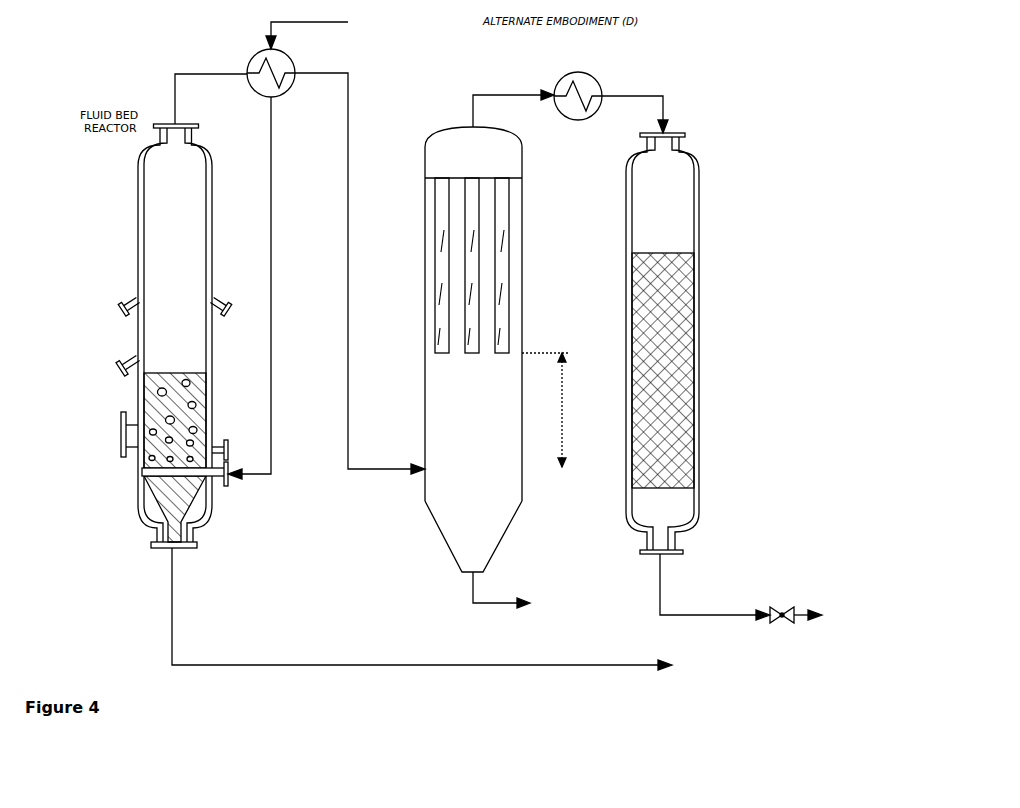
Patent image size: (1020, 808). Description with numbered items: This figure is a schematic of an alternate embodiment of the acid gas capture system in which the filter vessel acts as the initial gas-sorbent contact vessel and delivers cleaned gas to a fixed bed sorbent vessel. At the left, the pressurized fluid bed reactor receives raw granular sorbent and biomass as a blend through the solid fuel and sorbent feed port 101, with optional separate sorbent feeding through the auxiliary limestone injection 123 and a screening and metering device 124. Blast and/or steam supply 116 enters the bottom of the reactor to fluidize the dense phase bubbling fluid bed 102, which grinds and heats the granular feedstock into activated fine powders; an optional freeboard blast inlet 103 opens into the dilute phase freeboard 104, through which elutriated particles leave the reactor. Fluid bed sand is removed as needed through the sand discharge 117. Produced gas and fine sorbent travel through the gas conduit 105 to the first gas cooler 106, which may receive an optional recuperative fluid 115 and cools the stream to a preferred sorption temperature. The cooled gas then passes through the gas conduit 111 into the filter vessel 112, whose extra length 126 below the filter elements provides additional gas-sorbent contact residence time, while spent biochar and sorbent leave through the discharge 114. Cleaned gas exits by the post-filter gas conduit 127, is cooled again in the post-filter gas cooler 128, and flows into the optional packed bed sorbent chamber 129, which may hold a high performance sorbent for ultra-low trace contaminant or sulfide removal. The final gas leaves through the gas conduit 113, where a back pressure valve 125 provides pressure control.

The solid fuel and sorbent feed port 101 is at (118, 436).
The dense phase, bubbling fluid bed 102 is at (147, 410).
The freeboard blast inlet 103 is at (124, 290).
The dilute phase, freeboard 104 is at (163, 290).
The gas conduit after fluid bed vessel 105 is at (172, 125).
The first gas cooler 106 is at (256, 51).
The gas conduit to filter vessel 111 is at (370, 472).
The filter vessel 112 is at (419, 257).
The gas conduit at filter vessel discharge 113 is at (682, 615).
The spent biochar and sorbent discharge 114 is at (516, 591).
The recuperative fluid to first exchanger 115 is at (320, 32).
The blast and/or steam supply to fluid bed reactor 116 is at (228, 483).
The fluid bed sand discharge 117 is at (435, 610).
The limestone injection, auxiliary 123 is at (224, 443).
The screening and metering device 124 is at (120, 350).
The back pressure valve 125 is at (785, 602).
The extra length in filter vessel below elements 126 is at (548, 410).
The gas conduit, post filter 127 is at (545, 92).
The gas cooler, post filter 128 is at (592, 75).
The packed bed sorbent chamber 129 is at (683, 253).